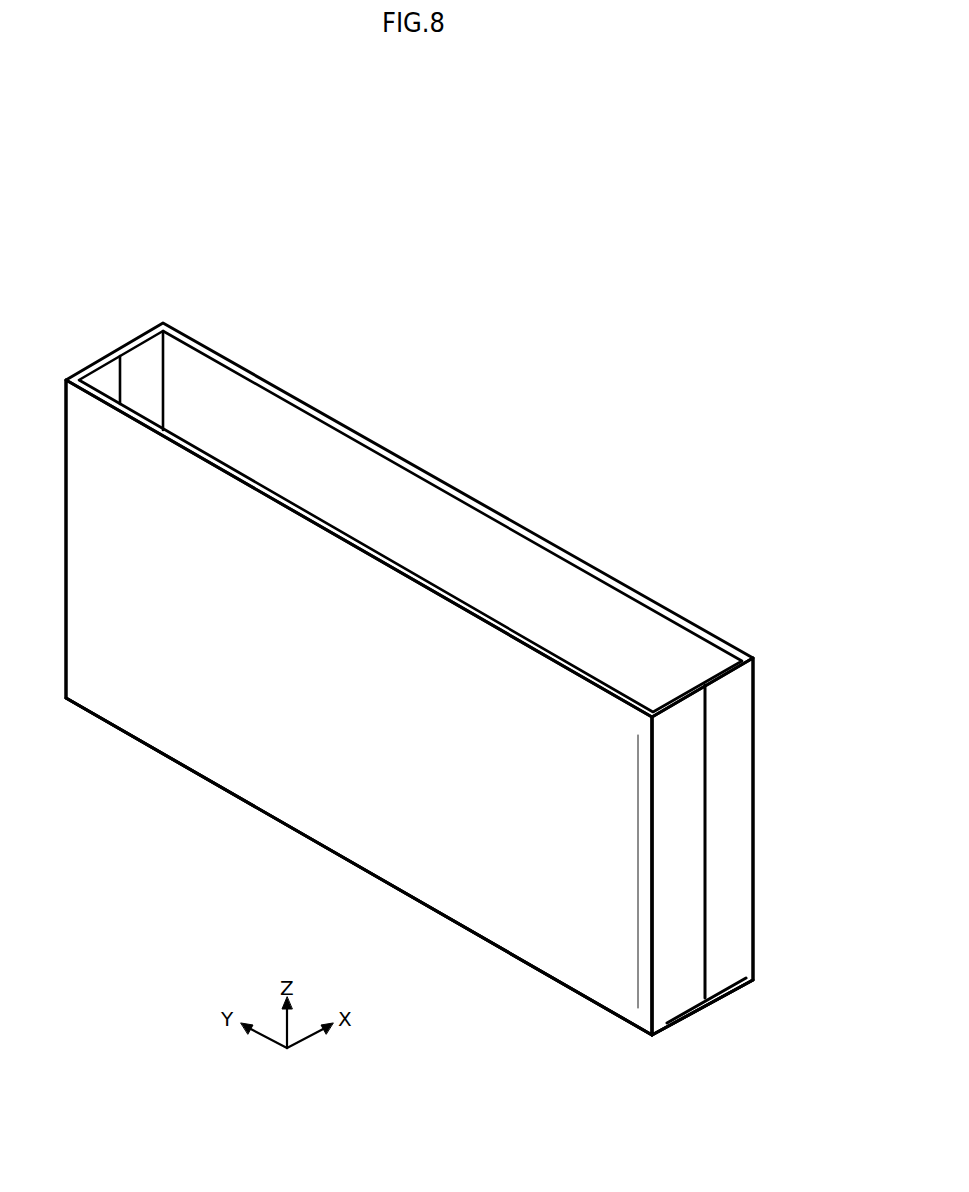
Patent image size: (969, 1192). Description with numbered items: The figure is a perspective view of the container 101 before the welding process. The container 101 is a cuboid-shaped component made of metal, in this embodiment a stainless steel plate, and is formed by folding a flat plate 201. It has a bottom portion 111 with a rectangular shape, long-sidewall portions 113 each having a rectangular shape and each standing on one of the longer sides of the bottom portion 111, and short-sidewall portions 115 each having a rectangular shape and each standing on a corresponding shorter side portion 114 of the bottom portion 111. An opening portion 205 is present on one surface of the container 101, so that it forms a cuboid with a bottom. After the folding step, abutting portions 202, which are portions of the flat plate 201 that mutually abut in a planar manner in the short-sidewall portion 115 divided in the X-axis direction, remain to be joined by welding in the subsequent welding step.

The container 101 is at (553, 432).
The flat plate 201 is at (294, 391).
The opening portion 205 is at (408, 514).
The abutting portions 202 is at (118, 353).
The long-sidewall portion 113 is at (337, 742).
The short-sidewall portion 115 is at (673, 748).
The bottom portion 111 is at (473, 933).
The shorter side portion 114 is at (680, 1031).